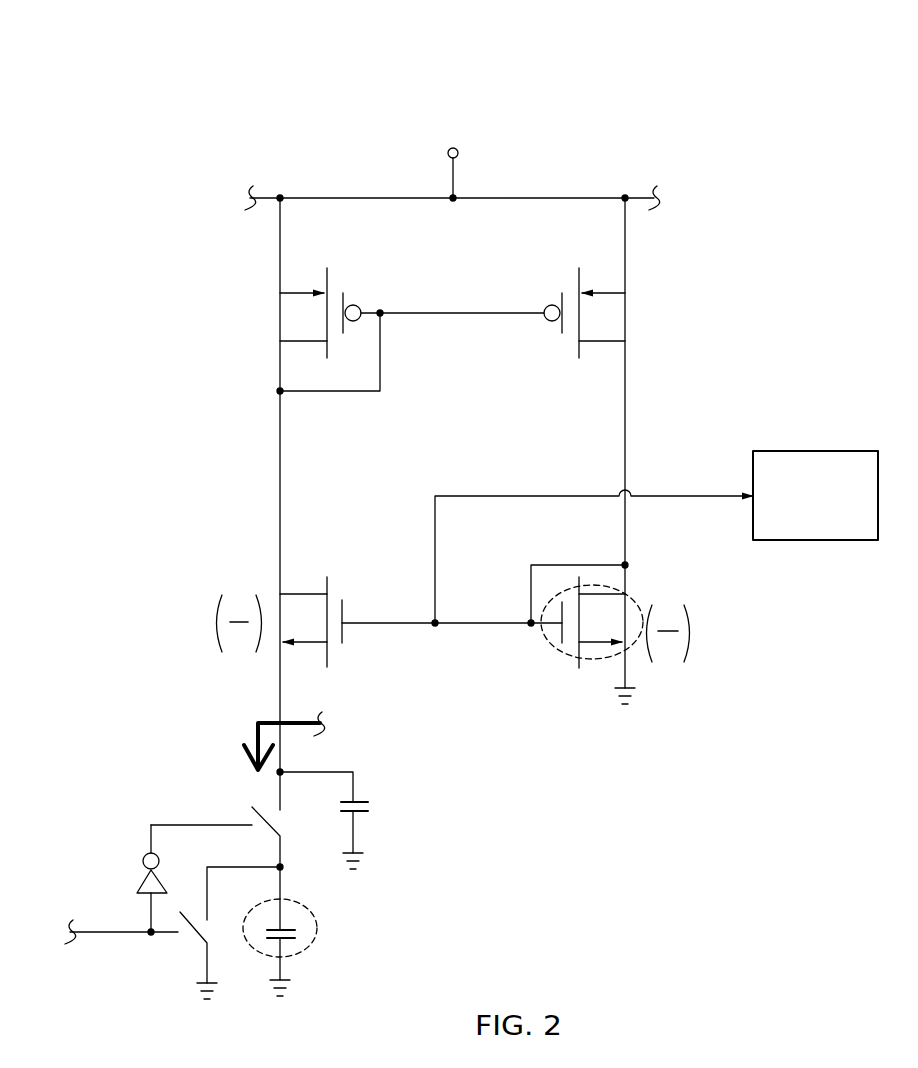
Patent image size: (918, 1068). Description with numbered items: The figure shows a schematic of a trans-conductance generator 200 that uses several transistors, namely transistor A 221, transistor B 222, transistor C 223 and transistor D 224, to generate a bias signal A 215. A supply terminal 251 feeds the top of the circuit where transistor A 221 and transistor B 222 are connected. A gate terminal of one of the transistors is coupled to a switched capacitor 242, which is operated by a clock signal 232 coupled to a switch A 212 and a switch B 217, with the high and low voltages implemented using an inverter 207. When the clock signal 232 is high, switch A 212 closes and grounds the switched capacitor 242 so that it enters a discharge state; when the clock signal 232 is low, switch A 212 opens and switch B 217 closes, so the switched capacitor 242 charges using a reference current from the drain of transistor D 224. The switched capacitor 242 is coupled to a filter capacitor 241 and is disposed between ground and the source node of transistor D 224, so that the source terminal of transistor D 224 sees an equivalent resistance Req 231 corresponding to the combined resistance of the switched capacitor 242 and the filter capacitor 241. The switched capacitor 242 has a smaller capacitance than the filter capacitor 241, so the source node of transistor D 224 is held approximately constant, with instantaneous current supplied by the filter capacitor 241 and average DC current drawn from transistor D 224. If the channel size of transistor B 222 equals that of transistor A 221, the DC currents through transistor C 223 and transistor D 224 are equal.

The trans-conductance generator 200 is at (205, 120).
The Vdd supply terminal 251 is at (460, 146).
The transistor B 222 is at (313, 320).
The transistor A 221 is at (595, 318).
The transistor D 224 is at (332, 568).
The transistor C 223 is at (592, 617).
The bias signal A 215 is at (798, 533).
The equivalent resistance (Req) 231 is at (287, 722).
The filter capacitor 241 is at (378, 807).
The switch B 217 is at (250, 805).
The inverter 207 is at (138, 869).
The clock signal 232 is at (124, 930).
The switch A 212 is at (196, 940).
The switched capacitor 242 is at (299, 940).